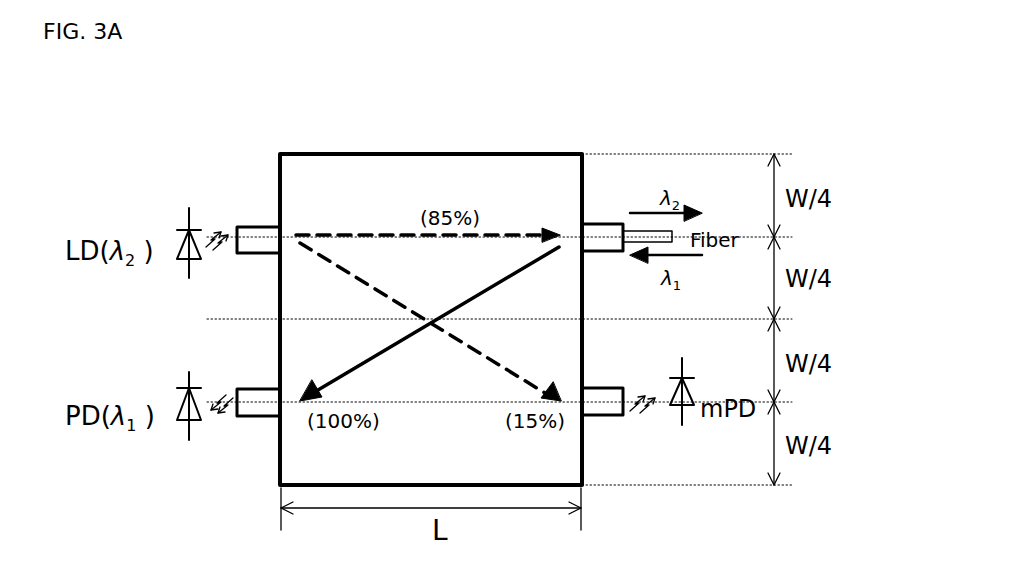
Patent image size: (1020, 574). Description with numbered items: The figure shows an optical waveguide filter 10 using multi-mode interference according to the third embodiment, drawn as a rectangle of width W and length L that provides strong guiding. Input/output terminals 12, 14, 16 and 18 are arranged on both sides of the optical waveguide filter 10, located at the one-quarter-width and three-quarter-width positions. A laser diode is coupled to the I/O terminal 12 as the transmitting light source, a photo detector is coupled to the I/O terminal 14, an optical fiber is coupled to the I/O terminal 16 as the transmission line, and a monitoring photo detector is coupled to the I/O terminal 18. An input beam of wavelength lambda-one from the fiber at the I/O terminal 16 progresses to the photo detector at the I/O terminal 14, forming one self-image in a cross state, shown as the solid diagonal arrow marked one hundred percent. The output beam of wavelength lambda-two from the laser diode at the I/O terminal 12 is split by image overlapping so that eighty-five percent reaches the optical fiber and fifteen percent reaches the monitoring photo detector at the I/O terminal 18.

The optical waveguide filter 10 is at (450, 130).
The I/O terminal 12 is at (255, 231).
The I/O terminal 14 is at (262, 411).
The I/O terminal 16 is at (603, 233).
The I/O terminal 18 is at (607, 410).